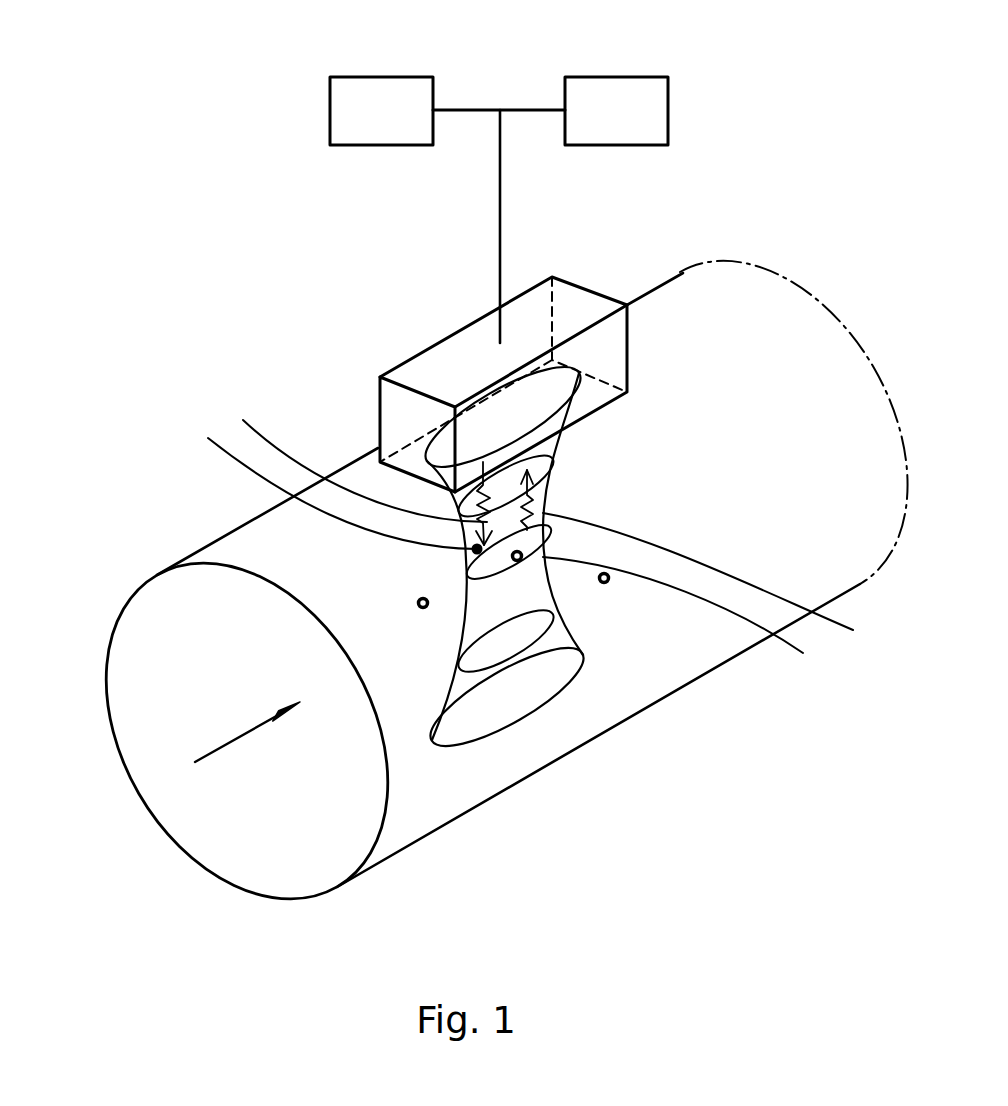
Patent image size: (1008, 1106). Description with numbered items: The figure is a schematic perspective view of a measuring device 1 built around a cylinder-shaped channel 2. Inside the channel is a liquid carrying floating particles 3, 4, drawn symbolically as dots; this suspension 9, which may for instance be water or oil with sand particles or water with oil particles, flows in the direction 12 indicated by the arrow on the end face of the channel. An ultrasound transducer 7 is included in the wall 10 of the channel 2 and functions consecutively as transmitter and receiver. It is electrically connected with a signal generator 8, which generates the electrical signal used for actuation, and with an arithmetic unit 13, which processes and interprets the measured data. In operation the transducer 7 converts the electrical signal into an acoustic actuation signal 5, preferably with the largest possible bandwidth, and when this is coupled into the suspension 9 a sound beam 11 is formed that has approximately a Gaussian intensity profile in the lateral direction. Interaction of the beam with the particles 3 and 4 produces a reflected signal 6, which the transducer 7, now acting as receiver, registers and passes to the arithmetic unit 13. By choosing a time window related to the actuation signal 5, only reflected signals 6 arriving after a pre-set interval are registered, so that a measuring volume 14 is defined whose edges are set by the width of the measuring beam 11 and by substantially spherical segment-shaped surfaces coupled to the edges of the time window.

The measuring device 1 is at (145, 253).
The channel 2 is at (455, 785).
The particle 3 is at (337, 484).
The particle 4 is at (685, 620).
The actuation signal 5 is at (356, 458).
The reflected signal 6 is at (707, 585).
The ultrasound transducer 7 is at (395, 365).
The signal generator 8 is at (380, 77).
The suspension 9 is at (325, 808).
The wall 10 is at (107, 652).
The sound beam 11 is at (583, 655).
The direction 12 is at (247, 730).
The arithmetic unit 13 is at (615, 77).
The measuring volume 14 is at (495, 563).